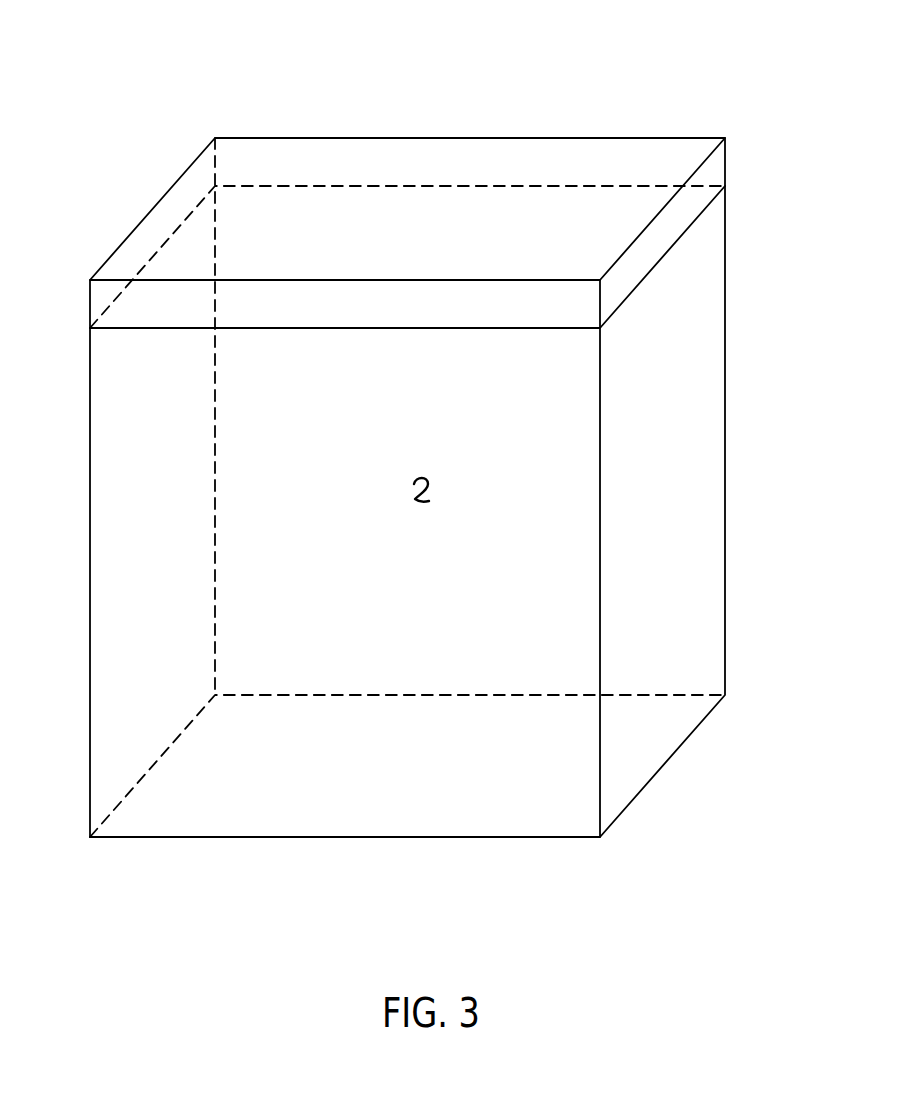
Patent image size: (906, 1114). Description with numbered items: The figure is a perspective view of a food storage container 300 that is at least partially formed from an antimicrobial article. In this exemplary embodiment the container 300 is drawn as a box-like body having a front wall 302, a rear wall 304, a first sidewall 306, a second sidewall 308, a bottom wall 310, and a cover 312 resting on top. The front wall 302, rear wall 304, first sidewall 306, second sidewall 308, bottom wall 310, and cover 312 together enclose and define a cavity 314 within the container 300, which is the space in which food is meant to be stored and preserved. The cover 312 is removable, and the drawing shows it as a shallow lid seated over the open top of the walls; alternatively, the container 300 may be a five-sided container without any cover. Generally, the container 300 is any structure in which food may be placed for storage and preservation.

The food storage container 300 is at (143, 64).
The front wall 302 is at (420, 785).
The rear wall 304 is at (383, 230).
The first sidewall 306 is at (682, 355).
The second sidewall 308 is at (127, 548).
The bottom wall 310 is at (255, 785).
The cover 312 is at (153, 209).
The cavity 314 is at (432, 495).